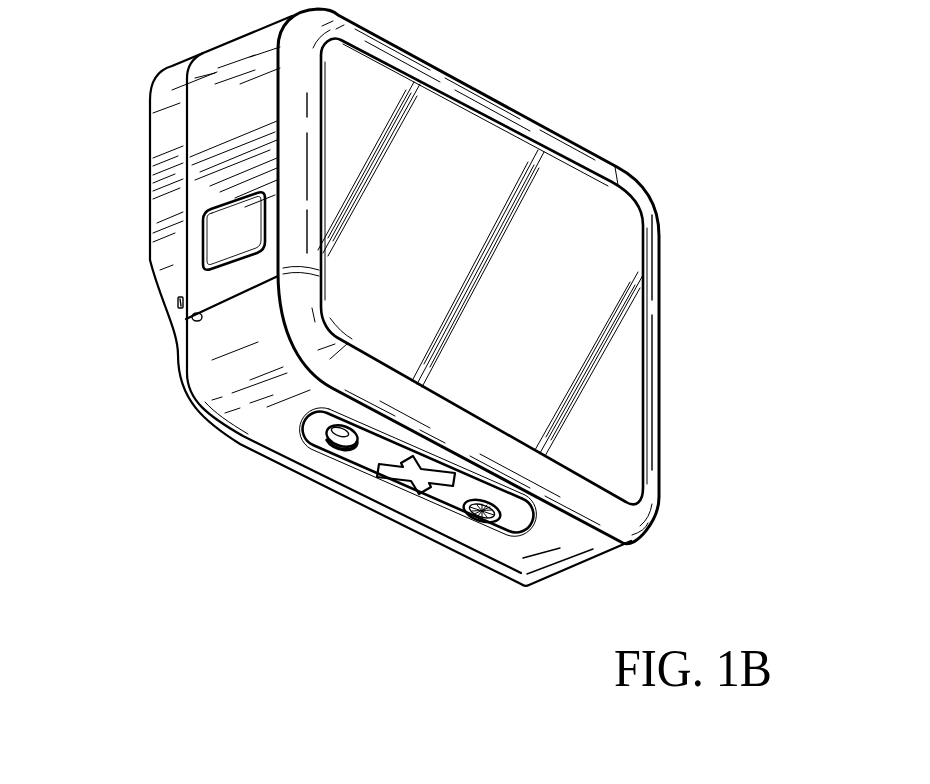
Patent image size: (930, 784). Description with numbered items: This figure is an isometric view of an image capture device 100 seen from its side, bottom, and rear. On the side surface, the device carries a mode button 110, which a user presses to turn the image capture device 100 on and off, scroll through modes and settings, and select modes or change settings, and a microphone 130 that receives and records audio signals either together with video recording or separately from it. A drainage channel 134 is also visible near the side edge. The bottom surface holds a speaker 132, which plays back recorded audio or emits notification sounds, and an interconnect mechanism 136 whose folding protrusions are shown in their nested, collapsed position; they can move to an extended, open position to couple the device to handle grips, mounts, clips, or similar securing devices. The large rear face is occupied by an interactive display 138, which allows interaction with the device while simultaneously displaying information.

The image capture device 100 is at (391, 318).
The mode button 110 is at (217, 237).
The microphone 130 is at (192, 320).
The speaker 132 is at (481, 521).
The drainage channel 134 is at (172, 300).
The interconnect mechanism 136 is at (348, 458).
The interactive display 138 is at (618, 388).